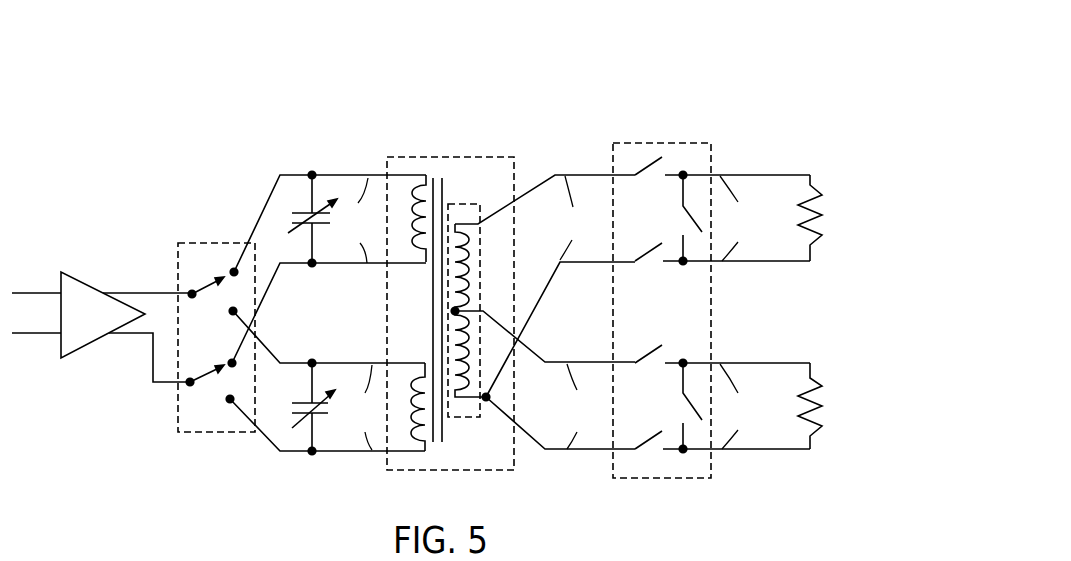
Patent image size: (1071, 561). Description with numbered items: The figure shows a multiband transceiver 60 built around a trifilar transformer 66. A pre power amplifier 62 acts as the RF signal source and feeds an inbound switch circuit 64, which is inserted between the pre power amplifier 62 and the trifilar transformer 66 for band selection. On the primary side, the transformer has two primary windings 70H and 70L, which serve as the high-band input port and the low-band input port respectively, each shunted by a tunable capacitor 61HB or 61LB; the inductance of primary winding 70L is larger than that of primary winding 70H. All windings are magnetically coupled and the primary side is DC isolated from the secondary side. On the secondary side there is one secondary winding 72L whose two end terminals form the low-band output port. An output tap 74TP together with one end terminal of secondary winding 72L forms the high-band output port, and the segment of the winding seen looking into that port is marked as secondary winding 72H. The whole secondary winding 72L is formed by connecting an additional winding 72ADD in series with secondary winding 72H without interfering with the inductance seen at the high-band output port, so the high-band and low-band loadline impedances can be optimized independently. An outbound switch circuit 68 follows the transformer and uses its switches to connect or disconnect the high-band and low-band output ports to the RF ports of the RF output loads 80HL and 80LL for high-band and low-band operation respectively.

The multiband transceiver 60 is at (439, 76).
The pre power amplifier 62 is at (78, 281).
The inbound switch circuit 64 is at (192, 243).
The tunable capacitor 61LB is at (301, 219).
The tunable capacitor 61HB is at (300, 407).
The trifilar transformer 66 is at (430, 157).
The primary winding 70L is at (406, 240).
The primary winding 70H is at (413, 417).
The additional winding 72ADD is at (469, 262).
The secondary winding 72H is at (468, 348).
The secondary winding 72L is at (480, 418).
The output tap 74TP is at (487, 310).
The outbound switch circuit 68 is at (652, 143).
The RF output load 80LL is at (822, 207).
The RF output load 80HL is at (822, 397).